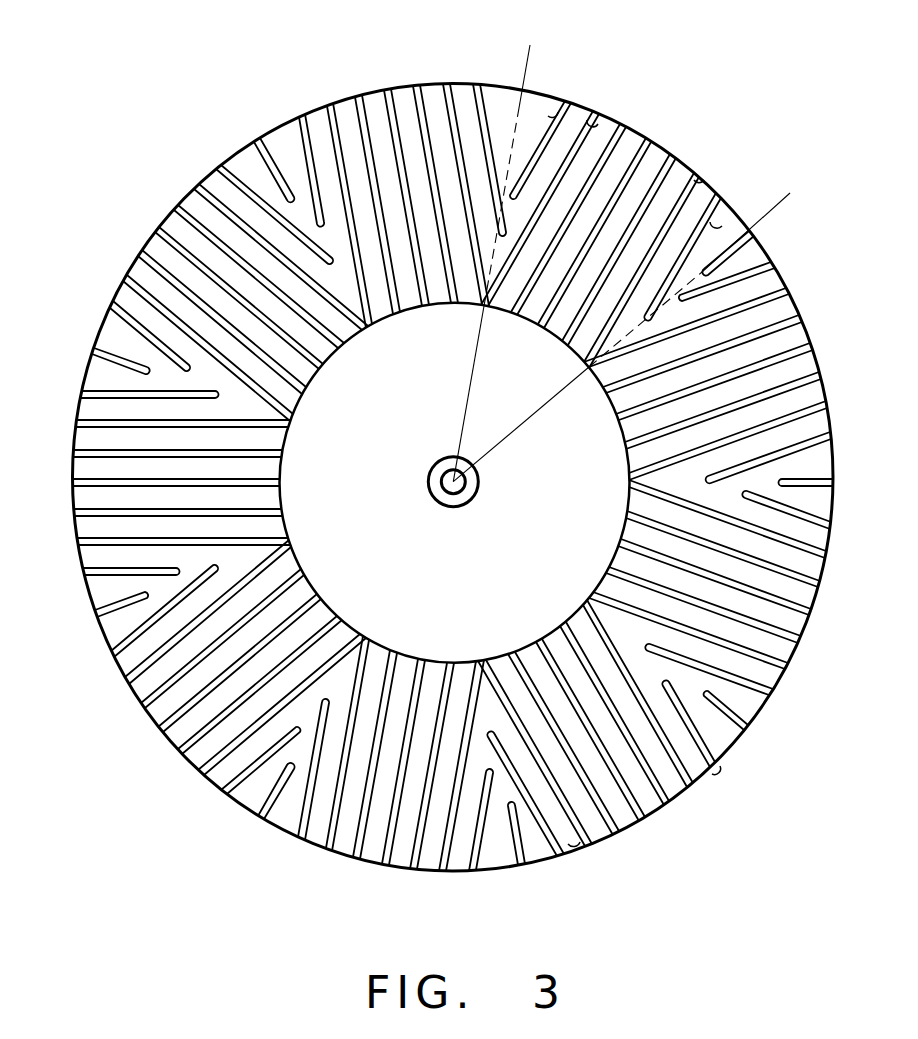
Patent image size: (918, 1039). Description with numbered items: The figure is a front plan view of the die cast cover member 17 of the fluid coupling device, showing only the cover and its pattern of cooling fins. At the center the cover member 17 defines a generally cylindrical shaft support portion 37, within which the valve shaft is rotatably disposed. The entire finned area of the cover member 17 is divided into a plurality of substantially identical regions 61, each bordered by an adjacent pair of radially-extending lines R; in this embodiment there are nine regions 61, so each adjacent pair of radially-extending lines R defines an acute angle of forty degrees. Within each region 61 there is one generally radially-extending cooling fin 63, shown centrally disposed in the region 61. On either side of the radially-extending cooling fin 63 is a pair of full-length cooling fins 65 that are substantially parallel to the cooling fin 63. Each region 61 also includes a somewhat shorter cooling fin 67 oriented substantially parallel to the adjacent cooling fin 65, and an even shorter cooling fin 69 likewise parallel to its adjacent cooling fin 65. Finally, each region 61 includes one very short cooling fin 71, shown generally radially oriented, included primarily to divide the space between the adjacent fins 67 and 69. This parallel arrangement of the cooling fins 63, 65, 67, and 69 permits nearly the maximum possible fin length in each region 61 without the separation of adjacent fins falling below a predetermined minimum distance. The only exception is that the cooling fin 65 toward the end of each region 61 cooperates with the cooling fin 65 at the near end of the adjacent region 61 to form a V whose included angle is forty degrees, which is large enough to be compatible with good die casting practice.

The cover member 17 is at (228, 156).
The shaft support portion 37 is at (434, 474).
The regions 61 is at (705, 96).
The radially-extending cooling fin 63 is at (668, 172).
The full-length parallel cooling fins 65 is at (587, 120).
The shorter cooling fin 67 is at (710, 222).
The even shorter cooling fin 69 is at (548, 116).
The very short cooling fin 71 is at (278, 148).
The radially-extending lines R is at (532, 61).